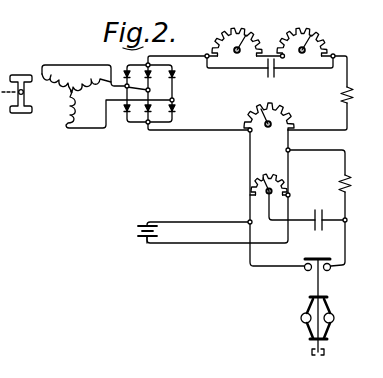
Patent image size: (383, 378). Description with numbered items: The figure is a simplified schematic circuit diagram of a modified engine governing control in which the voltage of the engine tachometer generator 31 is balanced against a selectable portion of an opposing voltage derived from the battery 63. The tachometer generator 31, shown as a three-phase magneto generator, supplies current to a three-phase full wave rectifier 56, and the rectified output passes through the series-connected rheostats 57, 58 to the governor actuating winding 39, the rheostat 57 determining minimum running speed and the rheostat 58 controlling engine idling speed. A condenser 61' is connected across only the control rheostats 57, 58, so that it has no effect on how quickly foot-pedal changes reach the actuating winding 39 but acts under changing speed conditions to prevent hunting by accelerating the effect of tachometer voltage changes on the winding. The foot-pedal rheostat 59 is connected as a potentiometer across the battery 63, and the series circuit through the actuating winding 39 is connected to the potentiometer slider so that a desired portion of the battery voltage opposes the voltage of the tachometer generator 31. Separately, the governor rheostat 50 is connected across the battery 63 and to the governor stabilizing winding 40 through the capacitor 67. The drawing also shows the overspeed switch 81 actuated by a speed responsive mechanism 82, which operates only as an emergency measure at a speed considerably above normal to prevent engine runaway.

The engine tachometer generator 31 is at (37, 62).
The three-phase full wave rectifier 56 is at (149, 93).
The rheostat 57 is at (249, 39).
The rheostat 58 is at (317, 39).
The rheostat 59 is at (283, 110).
The governor rheostat 50 is at (268, 172).
The condenser 61' is at (285, 72).
The servomotor control winding 39 is at (348, 88).
The stabilizing winding 40 is at (350, 180).
The capacitor 67 is at (318, 209).
The battery 63 is at (137, 232).
The overspeed switch 81 is at (322, 283).
The speed responsive mechanism 82 is at (334, 318).